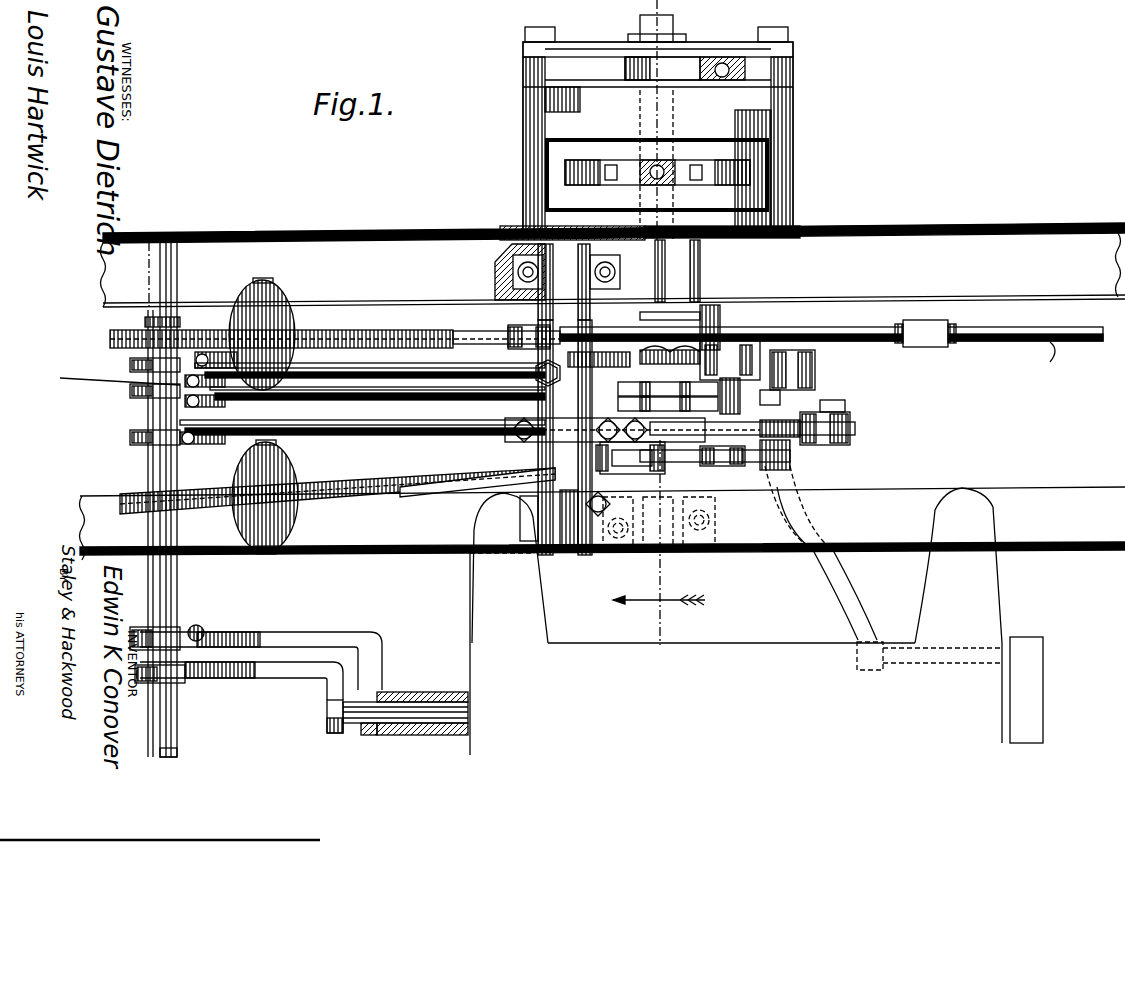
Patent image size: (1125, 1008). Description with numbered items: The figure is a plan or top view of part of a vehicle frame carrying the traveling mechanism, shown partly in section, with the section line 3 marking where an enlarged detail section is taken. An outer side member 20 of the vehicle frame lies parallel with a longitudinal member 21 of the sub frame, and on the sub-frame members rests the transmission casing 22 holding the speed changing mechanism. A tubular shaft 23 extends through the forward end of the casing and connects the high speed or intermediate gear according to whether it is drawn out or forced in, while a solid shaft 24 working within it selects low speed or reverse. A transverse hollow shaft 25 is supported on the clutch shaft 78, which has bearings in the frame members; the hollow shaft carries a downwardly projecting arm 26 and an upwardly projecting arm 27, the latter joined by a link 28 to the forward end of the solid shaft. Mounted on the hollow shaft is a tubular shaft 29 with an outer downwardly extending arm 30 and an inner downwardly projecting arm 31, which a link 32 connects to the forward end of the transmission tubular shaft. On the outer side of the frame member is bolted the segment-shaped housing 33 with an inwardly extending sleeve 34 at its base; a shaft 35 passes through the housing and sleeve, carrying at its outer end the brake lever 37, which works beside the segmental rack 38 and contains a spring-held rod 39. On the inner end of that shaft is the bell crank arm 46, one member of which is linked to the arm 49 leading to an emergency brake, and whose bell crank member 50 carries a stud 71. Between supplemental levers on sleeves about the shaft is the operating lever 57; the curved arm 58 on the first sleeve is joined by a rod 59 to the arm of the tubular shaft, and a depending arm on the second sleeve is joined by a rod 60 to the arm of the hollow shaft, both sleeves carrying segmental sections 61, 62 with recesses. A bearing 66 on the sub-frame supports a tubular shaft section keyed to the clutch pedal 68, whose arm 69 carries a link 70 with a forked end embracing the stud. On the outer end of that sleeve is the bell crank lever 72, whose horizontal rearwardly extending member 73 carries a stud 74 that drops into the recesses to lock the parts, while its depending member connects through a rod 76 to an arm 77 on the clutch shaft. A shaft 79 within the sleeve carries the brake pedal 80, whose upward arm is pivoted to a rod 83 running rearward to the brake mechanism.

The section line 3— 3 is at (659, 617).
The outer side member of vehicle frame 20 is at (613, 265).
The longitudinal member of sub frame 21 is at (603, 523).
The transmission casing 22 is at (756, 653).
The tubular shaft 23 is at (430, 692).
The solid shaft 24 is at (360, 735).
The transverse hollow shaft 25 is at (178, 745).
The downwardly projecting arm 26 is at (150, 412).
The upwardly projecting arm 27 is at (150, 683).
The link 28 is at (245, 680).
The tubular shaft 29 is at (160, 462).
The downwardly extending arm 30 is at (130, 438).
The downwardly projecting arm 31 is at (160, 626).
The link 32 is at (245, 630).
The segment-shaped housing 33 is at (793, 170).
The sleeve 34 is at (720, 318).
The shaft 35 is at (675, 120).
The brake lever 37 is at (690, 70).
The segmental rack 38 is at (603, 35).
The rod 39 is at (722, 60).
The bell crank arm 46 is at (530, 510).
The arm 49 is at (855, 580).
The bell crank member 50 is at (718, 444).
The operating lever 57 is at (662, 162).
The curved arm 58 is at (735, 424).
The rod 59 is at (372, 437).
The rod 60 is at (420, 403).
The segmental section 61 is at (628, 404).
The segmental section 62 is at (530, 327).
The bearing 66 is at (557, 282).
The clutch pedal 68 is at (395, 487).
The arm 69 is at (612, 462).
The link 70 is at (629, 518).
The stud 71 is at (711, 520).
The bell crank lever 72 is at (599, 357).
The horizontal rearwardly extending member 73 is at (700, 362).
The stud 74 is at (770, 392).
The rod 76 is at (203, 372).
The arm 77 is at (215, 352).
The clutch shaft 78 is at (145, 323).
The shaft 79 is at (565, 557).
The brake pedal 80 is at (418, 330).
The rod 83 is at (800, 328).